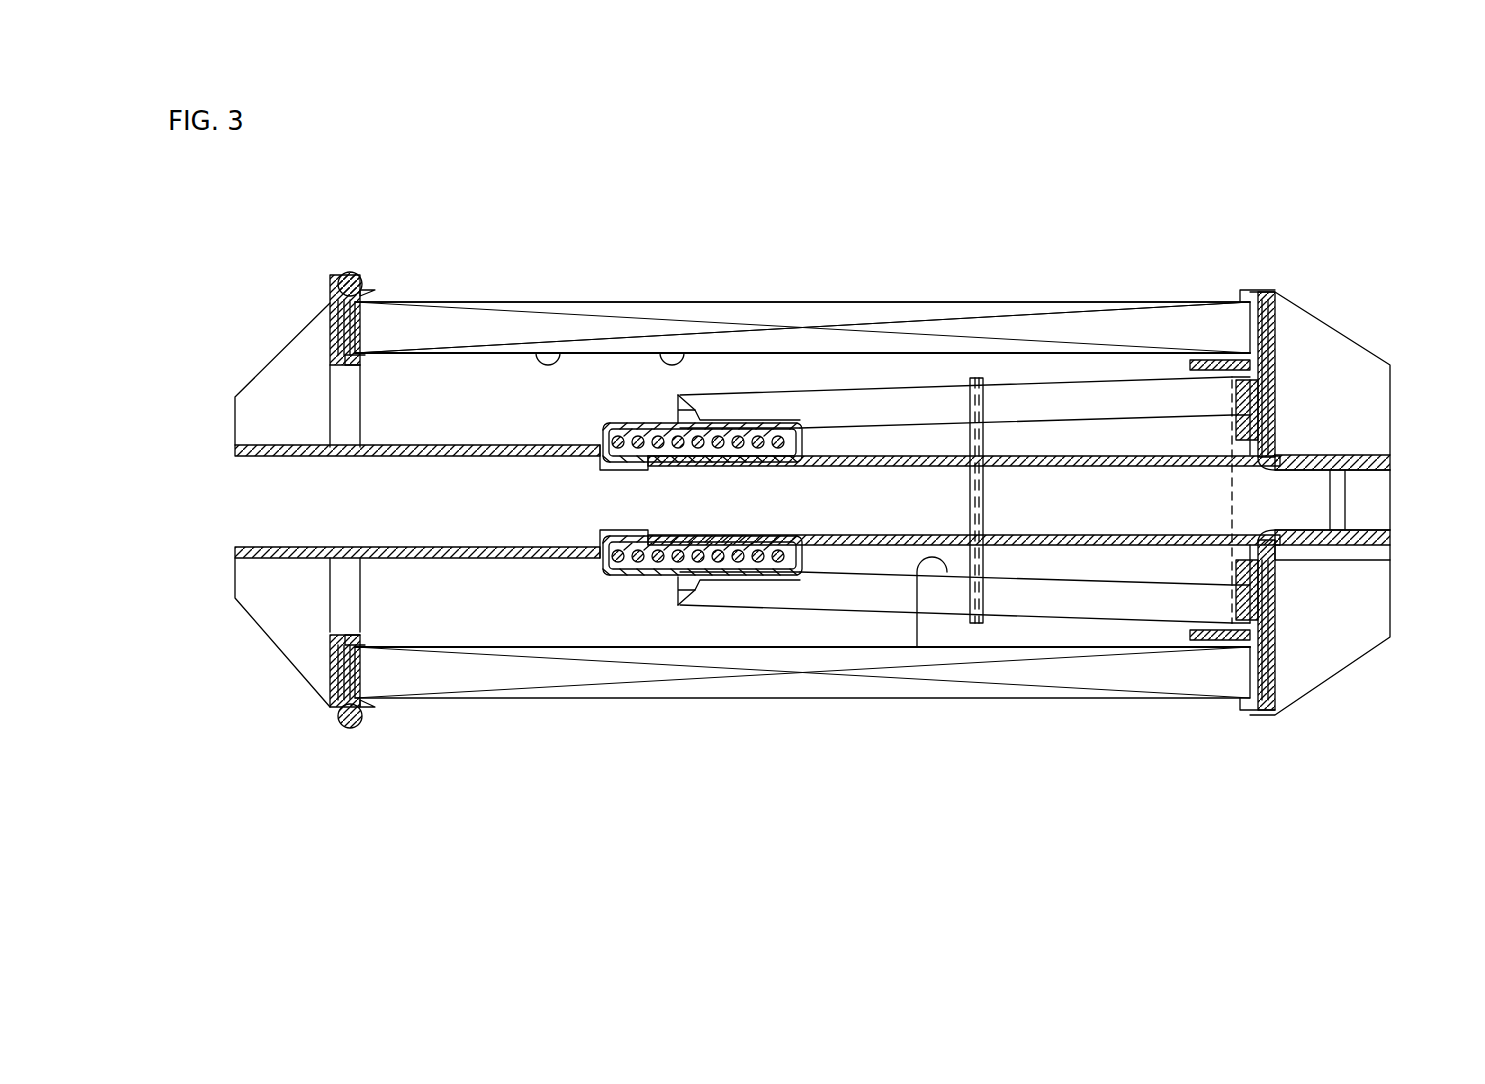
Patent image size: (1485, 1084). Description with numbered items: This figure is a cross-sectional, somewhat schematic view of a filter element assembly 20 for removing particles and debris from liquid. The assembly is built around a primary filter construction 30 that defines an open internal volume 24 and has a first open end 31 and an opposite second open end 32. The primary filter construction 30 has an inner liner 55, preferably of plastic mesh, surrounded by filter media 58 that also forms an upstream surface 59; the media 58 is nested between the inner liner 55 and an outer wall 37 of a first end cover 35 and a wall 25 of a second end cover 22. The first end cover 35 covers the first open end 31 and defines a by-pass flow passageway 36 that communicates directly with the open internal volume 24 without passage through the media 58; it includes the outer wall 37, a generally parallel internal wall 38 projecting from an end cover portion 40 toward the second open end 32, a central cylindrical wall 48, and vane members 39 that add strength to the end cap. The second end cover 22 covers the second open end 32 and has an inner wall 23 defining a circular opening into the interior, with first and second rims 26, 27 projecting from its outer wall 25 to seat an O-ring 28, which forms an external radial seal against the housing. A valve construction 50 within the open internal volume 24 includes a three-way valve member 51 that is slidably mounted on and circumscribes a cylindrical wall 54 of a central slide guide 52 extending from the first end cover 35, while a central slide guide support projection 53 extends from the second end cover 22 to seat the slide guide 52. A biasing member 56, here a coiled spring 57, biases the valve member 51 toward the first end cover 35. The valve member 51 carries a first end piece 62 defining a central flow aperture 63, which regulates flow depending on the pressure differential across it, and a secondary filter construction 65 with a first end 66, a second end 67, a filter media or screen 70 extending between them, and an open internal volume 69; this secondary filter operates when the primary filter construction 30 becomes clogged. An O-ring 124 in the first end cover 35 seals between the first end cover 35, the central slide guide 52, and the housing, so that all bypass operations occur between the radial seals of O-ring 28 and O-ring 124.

The filter element assembly 20 is at (625, 175).
The second end cover 22 is at (330, 707).
The inner wall 23 is at (337, 370).
The open internal volume 24 is at (560, 350).
The outer wall 25 is at (375, 705).
The first rim 26 is at (340, 275).
The second rim 27 is at (370, 268).
The O-ring 28 is at (343, 728).
The primary filter construction 30 is at (480, 275).
The first open end 31 is at (1280, 452).
The second open end 32 is at (330, 610).
The first end cover 35 is at (1280, 680).
The by-pass flow passageway 36 is at (1262, 578).
The outer wall 37 is at (1250, 708).
The internal wall 38 is at (1215, 634).
The vane member 39 is at (1325, 340).
The end cover portion 40 is at (1270, 690).
The central cylindrical wall 48 is at (1380, 460).
The valve construction 50 is at (1092, 632).
The three-way valve member 51 is at (1200, 560).
The central slide guide 52 is at (1025, 452).
The central slide guide support projection 53 is at (480, 562).
The cylindrical wall 54 is at (1085, 535).
The inner liner 55 is at (680, 350).
The biasing member 56 is at (748, 582).
The coiled spring 57 is at (632, 438).
The filter media 58 is at (778, 318).
The upstream surface 59 is at (850, 305).
The first end piece 62 is at (1275, 597).
The central flow aperture 63 is at (1290, 548).
The secondary filter construction 65 is at (1010, 383).
The first end 66 is at (1245, 410).
The second end 67 is at (800, 422).
The open internal volume 69 is at (933, 572).
The filter media or screen 70 is at (858, 607).
The O-ring 124 is at (1340, 500).